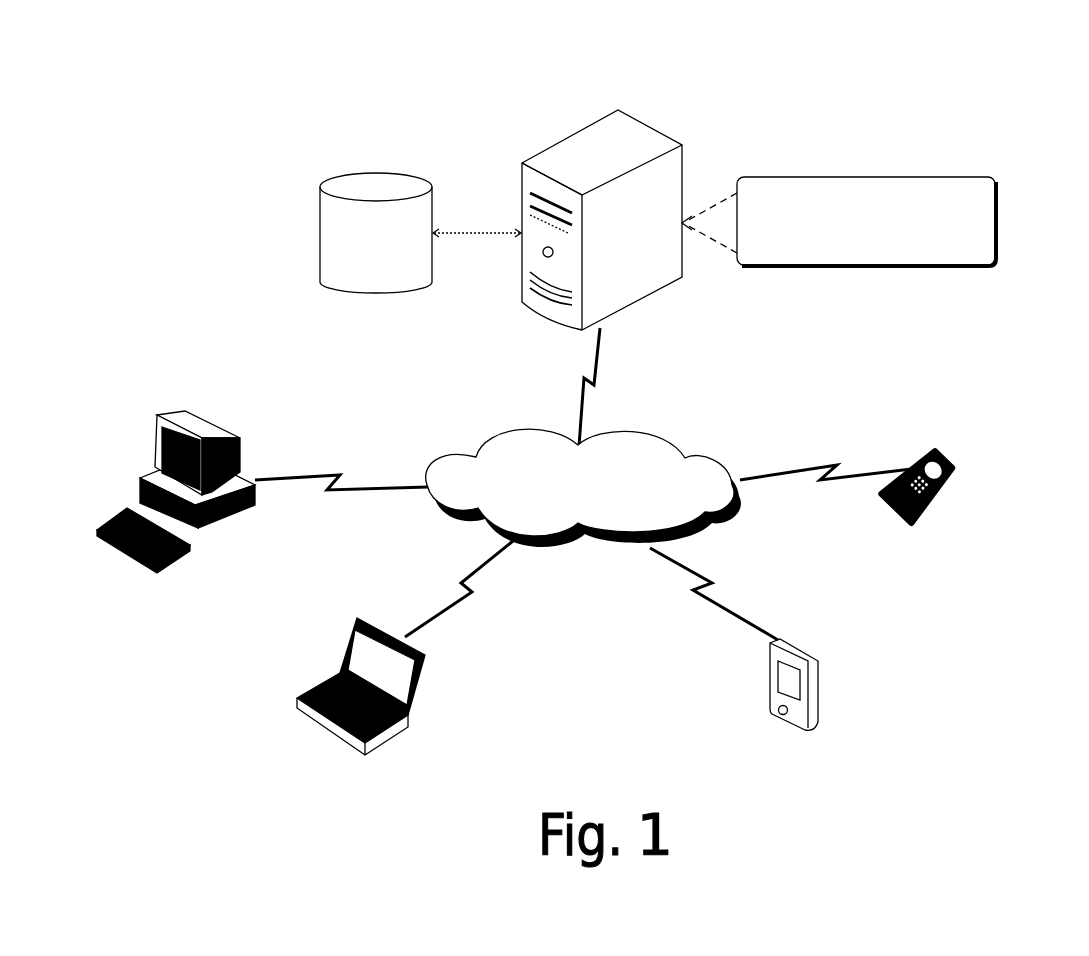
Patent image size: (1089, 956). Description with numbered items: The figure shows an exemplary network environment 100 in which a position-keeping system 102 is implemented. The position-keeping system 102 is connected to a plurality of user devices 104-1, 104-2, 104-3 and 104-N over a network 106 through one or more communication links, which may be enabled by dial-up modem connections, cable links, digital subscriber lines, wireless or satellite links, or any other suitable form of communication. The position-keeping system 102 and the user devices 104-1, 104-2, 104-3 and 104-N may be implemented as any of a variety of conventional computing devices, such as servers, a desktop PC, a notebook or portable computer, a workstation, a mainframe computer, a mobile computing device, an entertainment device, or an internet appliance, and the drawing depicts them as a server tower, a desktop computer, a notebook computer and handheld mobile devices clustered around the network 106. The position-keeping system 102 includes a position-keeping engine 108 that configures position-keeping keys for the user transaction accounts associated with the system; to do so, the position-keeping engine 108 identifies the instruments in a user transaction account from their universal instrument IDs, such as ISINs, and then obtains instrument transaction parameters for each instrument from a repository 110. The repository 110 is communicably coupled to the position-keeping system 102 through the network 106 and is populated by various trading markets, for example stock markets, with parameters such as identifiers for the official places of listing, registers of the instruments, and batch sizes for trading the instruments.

The network environment 100 is at (653, 60).
The position-keeping system 102 is at (572, 135).
The user device 104-1 is at (198, 413).
The user device 104-2 is at (358, 617).
The user device 104-3 is at (805, 650).
The user device 104-N is at (957, 450).
The network 106 is at (566, 511).
The position-keeping engine 108 is at (853, 250).
The repository 110 is at (353, 172).